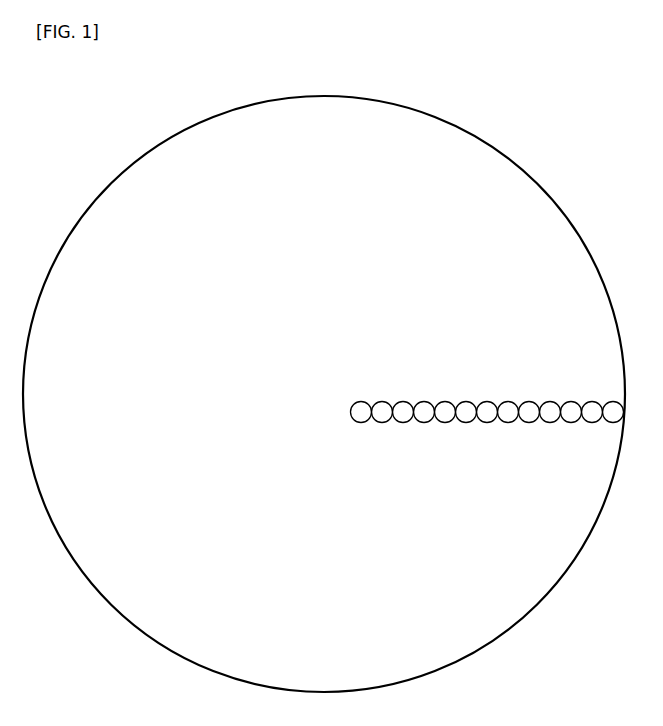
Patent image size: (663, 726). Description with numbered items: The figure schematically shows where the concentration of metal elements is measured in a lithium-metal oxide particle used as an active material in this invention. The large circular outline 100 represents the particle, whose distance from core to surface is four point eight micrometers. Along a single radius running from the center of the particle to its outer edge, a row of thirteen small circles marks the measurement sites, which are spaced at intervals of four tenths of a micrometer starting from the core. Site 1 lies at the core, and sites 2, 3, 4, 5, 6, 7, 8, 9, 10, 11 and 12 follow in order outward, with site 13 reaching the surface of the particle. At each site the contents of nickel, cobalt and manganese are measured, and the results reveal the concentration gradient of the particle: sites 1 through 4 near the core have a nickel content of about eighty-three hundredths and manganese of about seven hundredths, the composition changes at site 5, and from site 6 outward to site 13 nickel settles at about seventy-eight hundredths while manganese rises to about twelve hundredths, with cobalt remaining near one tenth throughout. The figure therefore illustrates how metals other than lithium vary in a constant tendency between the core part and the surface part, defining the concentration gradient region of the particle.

The wafer 100 is at (324, 394).
The measurement site 1 is at (361, 412).
The measurement site 2 is at (382, 412).
The measurement site 3 is at (403, 412).
The measurement site 4 is at (424, 412).
The measurement site 5 is at (445, 412).
The measurement site 6 is at (466, 412).
The measurement site 7 is at (487, 412).
The measurement site 8 is at (508, 412).
The measurement site 9 is at (529, 412).
The measurement site 10 is at (550, 412).
The measurement site 11 is at (571, 412).
The measurement site 12 is at (592, 412).
The measurement site 13 is at (613, 412).